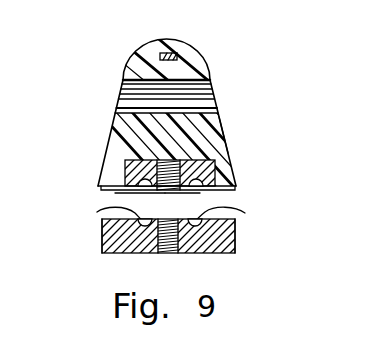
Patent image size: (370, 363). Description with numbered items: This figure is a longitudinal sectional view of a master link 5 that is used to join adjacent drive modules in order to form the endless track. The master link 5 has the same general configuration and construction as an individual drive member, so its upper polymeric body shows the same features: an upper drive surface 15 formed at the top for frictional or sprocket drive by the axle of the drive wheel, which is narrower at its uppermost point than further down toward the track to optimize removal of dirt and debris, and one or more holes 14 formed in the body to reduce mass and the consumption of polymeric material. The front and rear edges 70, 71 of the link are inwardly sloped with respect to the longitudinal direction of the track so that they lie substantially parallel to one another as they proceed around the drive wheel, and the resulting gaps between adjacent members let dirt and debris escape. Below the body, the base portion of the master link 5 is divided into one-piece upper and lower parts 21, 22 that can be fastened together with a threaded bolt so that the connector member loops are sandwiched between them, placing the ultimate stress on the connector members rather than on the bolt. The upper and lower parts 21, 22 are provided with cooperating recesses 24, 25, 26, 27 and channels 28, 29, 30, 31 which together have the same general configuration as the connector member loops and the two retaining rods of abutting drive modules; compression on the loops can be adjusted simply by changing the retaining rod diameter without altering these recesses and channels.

The master link 5 is at (219, 49).
The hole 14 is at (122, 94).
The upper drive surface 15 is at (161, 41).
The upper part of master link base portion 21 is at (200, 155).
The lower part of master link base portion 22 is at (234, 249).
The recess 24 is at (115, 193).
The recess 25 is at (97, 212).
The recess 26 is at (200, 193).
The recess 27 is at (245, 213).
The channel 28 is at (103, 186).
The channel 29 is at (102, 227).
The channel 30 is at (237, 187).
The channel 31 is at (238, 228).
The front edge 70 is at (112, 130).
The rear edge 71 is at (218, 128).